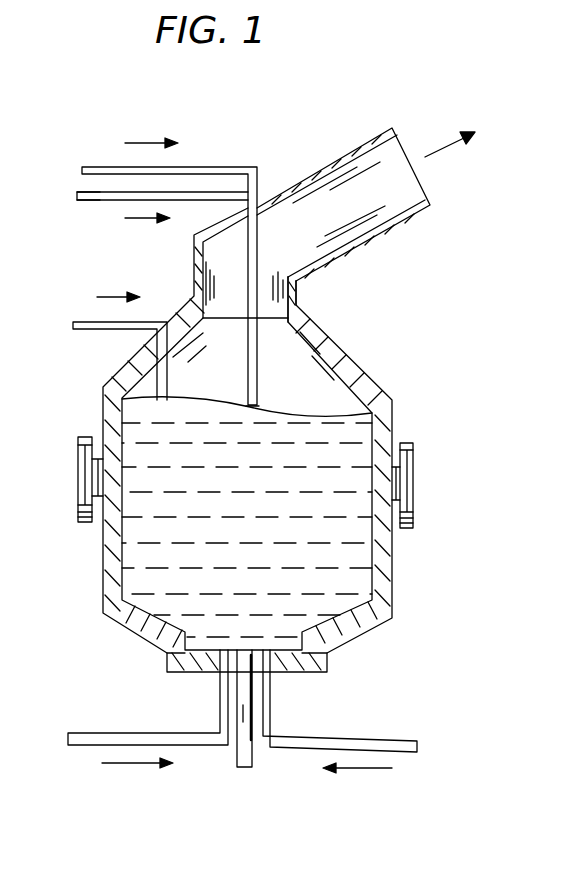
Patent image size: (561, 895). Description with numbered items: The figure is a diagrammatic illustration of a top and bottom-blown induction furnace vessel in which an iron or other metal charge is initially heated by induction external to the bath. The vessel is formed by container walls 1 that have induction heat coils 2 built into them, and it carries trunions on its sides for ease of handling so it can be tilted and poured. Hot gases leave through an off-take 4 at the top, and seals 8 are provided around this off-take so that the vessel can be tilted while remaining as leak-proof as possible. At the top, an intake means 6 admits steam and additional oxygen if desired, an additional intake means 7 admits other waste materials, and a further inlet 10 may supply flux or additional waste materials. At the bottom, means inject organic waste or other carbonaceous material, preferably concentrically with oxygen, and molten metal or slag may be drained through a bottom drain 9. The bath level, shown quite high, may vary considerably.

The container walls 1 is at (102, 397).
The induction heat coils 2 is at (102, 572).
The off-take 4 is at (348, 153).
The intake means for steam and additional oxygen 6 is at (202, 167).
The additional intake means for other waste materials 7 is at (92, 201).
The seals 8 is at (297, 307).
The bottom drain 9 is at (257, 758).
The further inlet 10 is at (100, 329).